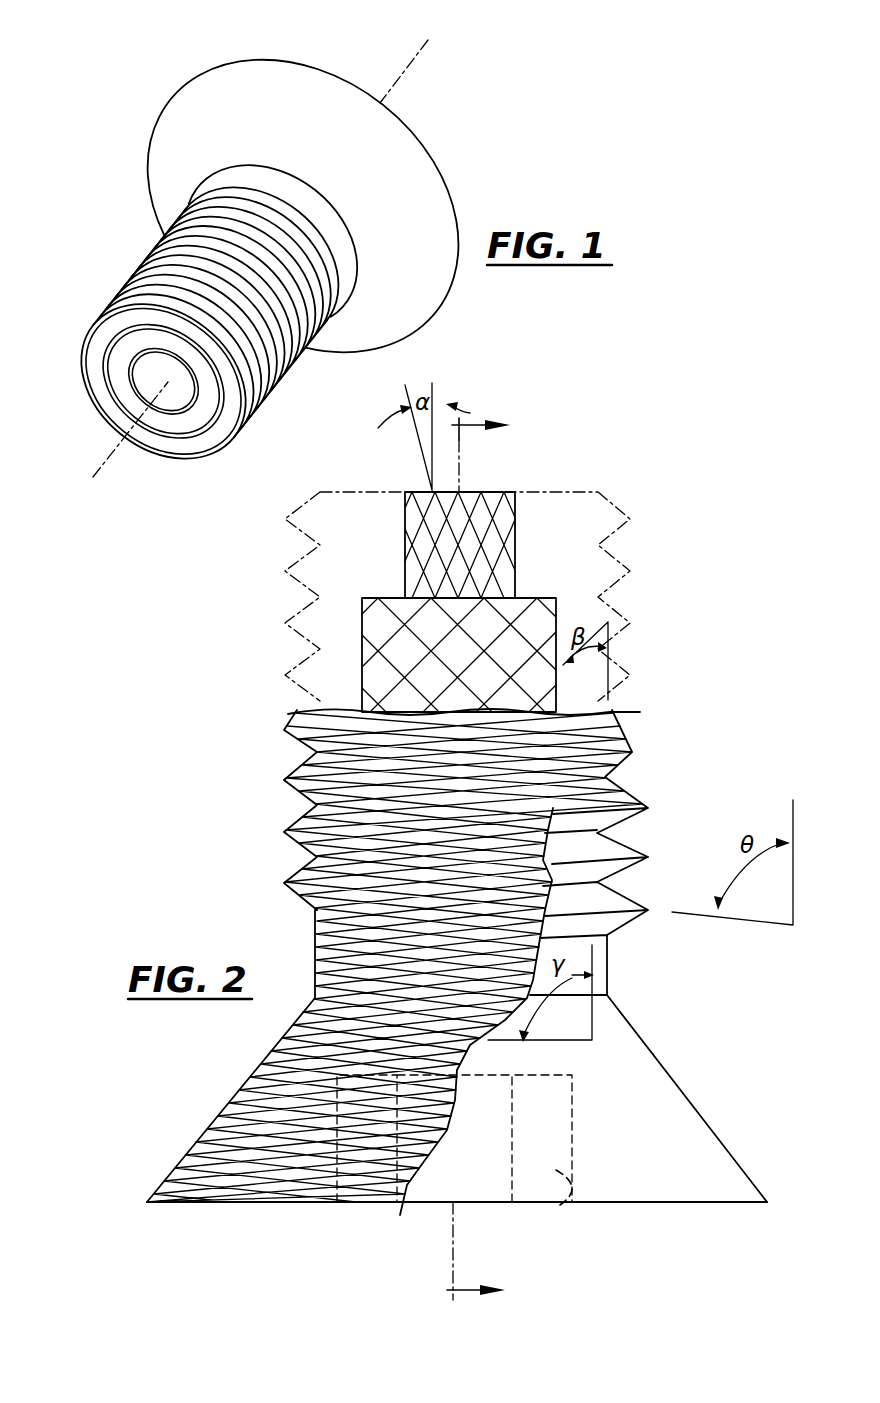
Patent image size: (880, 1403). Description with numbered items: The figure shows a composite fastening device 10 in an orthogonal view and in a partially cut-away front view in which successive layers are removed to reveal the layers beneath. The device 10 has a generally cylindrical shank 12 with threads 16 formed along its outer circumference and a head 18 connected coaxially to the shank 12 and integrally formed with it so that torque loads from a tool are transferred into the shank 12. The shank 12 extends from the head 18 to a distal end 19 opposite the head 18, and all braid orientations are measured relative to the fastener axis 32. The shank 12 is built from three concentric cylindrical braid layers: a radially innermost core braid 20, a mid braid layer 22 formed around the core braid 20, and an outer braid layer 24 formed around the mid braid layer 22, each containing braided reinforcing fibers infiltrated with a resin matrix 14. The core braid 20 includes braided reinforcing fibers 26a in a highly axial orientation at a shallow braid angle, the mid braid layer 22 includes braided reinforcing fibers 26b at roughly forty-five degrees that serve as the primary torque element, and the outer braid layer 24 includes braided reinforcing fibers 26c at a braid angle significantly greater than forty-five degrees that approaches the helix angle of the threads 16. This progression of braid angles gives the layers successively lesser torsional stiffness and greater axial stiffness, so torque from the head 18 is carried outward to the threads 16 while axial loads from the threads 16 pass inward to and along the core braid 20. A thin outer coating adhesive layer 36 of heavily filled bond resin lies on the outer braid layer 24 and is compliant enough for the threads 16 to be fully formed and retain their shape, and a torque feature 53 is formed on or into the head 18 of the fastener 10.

In FIG. 1, the fastening device 10 is at (90, 128).
In FIG. 2, the fastening device 10 is at (712, 627).
In FIG. 1, the shank 12 is at (118, 258).
In FIG. 2, the shank 12 is at (615, 772).
In FIG. 2, the resin matrix 14 is at (418, 536).
In FIG. 1, the threads 16 is at (288, 355).
In FIG. 2, the threads 16 is at (284, 883).
In FIG. 1, the head 18 is at (387, 182).
In FIG. 2, the head 18 is at (695, 1203).
In FIG. 1, the distal end 19 is at (173, 402).
In FIG. 2, the distal end 19 is at (592, 490).
In FIG. 2, the core braid 20 is at (497, 498).
In FIG. 2, the mid braid layer 22 is at (533, 618).
In FIG. 2, the outer braid layer 24 is at (572, 748).
In FIG. 2, the braided reinforcing fibers of the core braid 26a is at (423, 558).
In FIG. 2, the braided reinforcing fibers of the mid braid layer 26b is at (380, 617).
In FIG. 2, the braided reinforcing fibers of the outer braid layer 26c is at (340, 953).
In FIG. 1, the fastener axis 32 is at (418, 55).
In FIG. 2, the fastener axis 32 is at (460, 455).
In FIG. 2, the outer coating adhesive layer 36 is at (672, 1088).
In FIG. 2, the torque feature 53 is at (560, 1205).